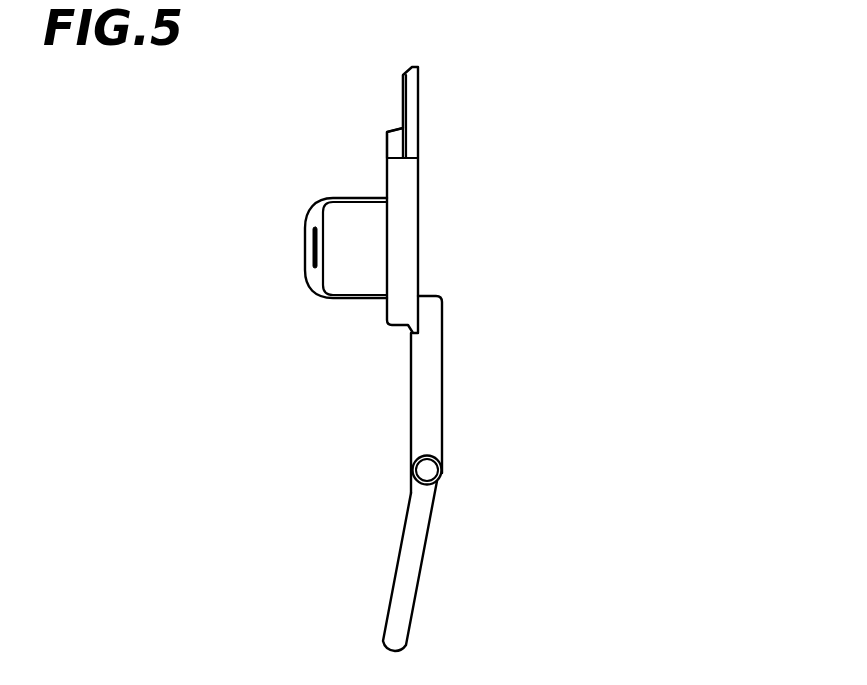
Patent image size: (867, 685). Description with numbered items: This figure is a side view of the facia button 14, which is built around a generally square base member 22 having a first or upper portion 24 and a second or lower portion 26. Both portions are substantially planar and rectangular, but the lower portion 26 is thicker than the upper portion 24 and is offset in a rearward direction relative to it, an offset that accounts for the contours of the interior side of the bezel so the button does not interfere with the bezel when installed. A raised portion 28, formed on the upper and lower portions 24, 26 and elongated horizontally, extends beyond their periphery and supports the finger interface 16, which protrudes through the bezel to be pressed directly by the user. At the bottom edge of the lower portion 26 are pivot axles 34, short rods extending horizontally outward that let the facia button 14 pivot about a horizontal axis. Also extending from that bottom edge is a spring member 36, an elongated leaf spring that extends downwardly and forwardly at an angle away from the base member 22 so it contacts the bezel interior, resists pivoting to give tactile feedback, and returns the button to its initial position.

The facia button 14 is at (578, 145).
The finger interface 16 is at (310, 275).
The base member 22 is at (495, 223).
The upper portion 24 is at (412, 112).
The lower portion 26 is at (430, 408).
The raised portion 28 is at (395, 144).
The pivot axles 34 is at (428, 470).
The spring member 36 is at (405, 590).